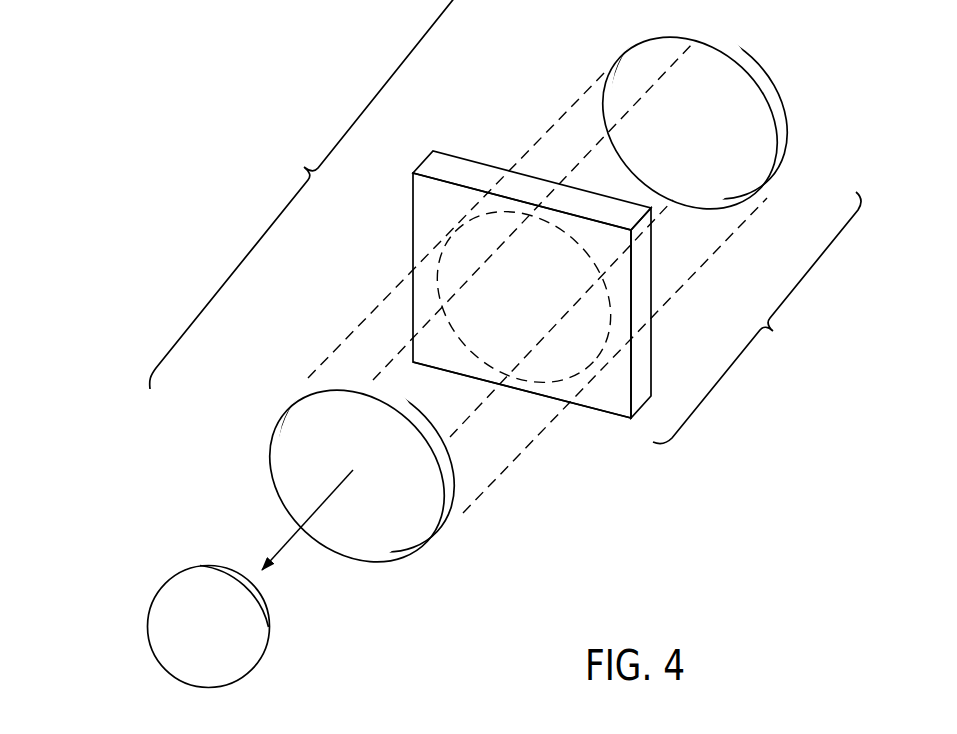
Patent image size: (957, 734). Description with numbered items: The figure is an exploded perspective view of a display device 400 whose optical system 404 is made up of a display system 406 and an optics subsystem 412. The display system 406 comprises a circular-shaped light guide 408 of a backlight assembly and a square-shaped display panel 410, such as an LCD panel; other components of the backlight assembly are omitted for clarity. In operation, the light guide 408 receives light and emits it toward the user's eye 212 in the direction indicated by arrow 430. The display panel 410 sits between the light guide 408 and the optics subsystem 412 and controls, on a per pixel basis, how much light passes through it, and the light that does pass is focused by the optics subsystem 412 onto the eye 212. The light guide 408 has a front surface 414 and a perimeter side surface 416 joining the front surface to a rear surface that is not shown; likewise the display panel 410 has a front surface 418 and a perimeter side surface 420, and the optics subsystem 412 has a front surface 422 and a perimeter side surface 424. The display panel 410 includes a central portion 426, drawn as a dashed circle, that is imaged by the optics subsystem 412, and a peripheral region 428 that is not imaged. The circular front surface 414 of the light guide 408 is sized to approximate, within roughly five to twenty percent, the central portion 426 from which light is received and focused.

The display device 400 is at (155, 172).
The optical system 404 is at (305, 194).
The display system 406 is at (757, 318).
The light guide 408 is at (691, 122).
The display panel 410 is at (499, 271).
The optics subsystem 412 is at (353, 477).
The front surface 414 is at (743, 152).
The perimeter side surface 416 is at (776, 110).
The front surface 418 is at (430, 215).
The perimeter side surface 420 is at (477, 173).
The front surface 422 is at (390, 532).
The perimeter side surface 424 is at (447, 488).
The central portion 426 is at (541, 313).
The peripheral region 428 is at (605, 393).
The arrow 430 is at (285, 547).
The eye 212 is at (160, 588).